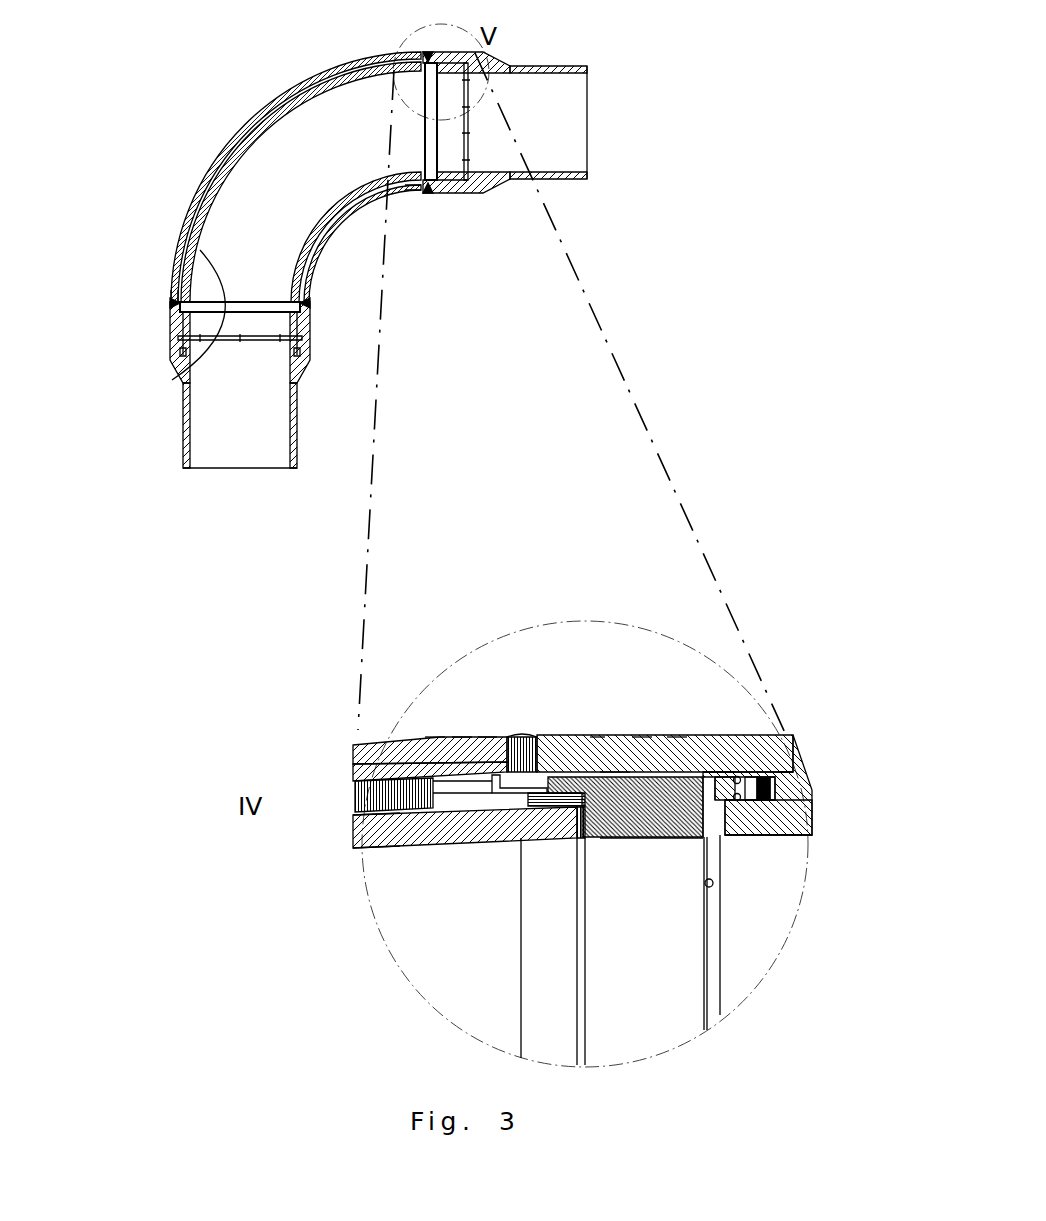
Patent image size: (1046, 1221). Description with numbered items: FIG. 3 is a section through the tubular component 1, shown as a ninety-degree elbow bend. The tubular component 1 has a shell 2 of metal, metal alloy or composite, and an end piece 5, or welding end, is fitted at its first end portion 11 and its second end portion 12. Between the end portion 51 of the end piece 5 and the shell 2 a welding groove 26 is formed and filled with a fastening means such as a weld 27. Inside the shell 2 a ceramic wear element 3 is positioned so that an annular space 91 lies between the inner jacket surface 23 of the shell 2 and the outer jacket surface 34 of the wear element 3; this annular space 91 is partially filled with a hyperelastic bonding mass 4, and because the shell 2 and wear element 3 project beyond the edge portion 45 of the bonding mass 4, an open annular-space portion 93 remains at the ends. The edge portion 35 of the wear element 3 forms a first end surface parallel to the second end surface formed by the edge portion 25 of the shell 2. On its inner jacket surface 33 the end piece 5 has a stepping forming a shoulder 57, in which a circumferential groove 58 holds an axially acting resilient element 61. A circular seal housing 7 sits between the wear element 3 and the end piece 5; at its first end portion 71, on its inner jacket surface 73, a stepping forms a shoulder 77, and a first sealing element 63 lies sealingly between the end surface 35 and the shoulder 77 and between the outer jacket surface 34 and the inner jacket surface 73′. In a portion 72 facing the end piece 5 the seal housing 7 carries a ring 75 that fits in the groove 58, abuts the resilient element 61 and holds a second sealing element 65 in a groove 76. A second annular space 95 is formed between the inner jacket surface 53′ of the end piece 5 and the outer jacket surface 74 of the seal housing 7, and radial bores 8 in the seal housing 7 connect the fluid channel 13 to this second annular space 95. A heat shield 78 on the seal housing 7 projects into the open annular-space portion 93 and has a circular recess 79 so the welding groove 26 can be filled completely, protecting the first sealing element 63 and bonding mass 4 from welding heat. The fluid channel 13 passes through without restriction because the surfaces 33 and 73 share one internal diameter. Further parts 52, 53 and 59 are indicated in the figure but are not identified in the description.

The tubular component 1 is at (205, 124).
The shell 2 is at (198, 183).
The wear element 3 is at (300, 258).
The bonding mass 4 is at (300, 245).
The end piece 5 is at (170, 360).
The seal housing 7 is at (605, 775).
The radial bores 8 is at (713, 886).
The first end portion 11 is at (388, 187).
The second end portion 12 is at (173, 262).
The fluid channel 13 is at (190, 383).
The inner jacket surface 23 is at (467, 790).
The edge portion 25 is at (487, 737).
The welding groove 26 is at (507, 737).
The weld 27 is at (170, 302).
The inner jacket surface 33 is at (303, 293).
The outer jacket surface 34 is at (303, 302).
The edge portion 35 is at (560, 843).
The edge portion 45 is at (440, 795).
The end portion 51 is at (178, 312).
The pipe 52 is at (183, 440).
The clamping ring 53 is at (587, 160).
The inner jacket surface 53′ is at (730, 735).
The shoulder 57 is at (745, 840).
The circumferential groove 58 is at (760, 800).
The support ring 59 is at (808, 832).
The resilient element 61 is at (745, 785).
The first sealing element 63 is at (577, 843).
The second sealing element 65 is at (778, 732).
The first end portion 71 is at (600, 843).
The portion 72 is at (650, 840).
The inner jacket surface 73 is at (820, 976).
The inner jacket surface 73′ is at (597, 737).
The outer jacket surface 74 is at (642, 737).
The ring 75 is at (770, 780).
The groove 76 is at (723, 838).
The shoulder 77 is at (587, 843).
The heat shield 78 is at (510, 843).
The circular recess 79 is at (495, 806).
The annular space 91 is at (395, 775).
The open annular-space portion 93 is at (395, 747).
The second annular space 95 is at (677, 737).